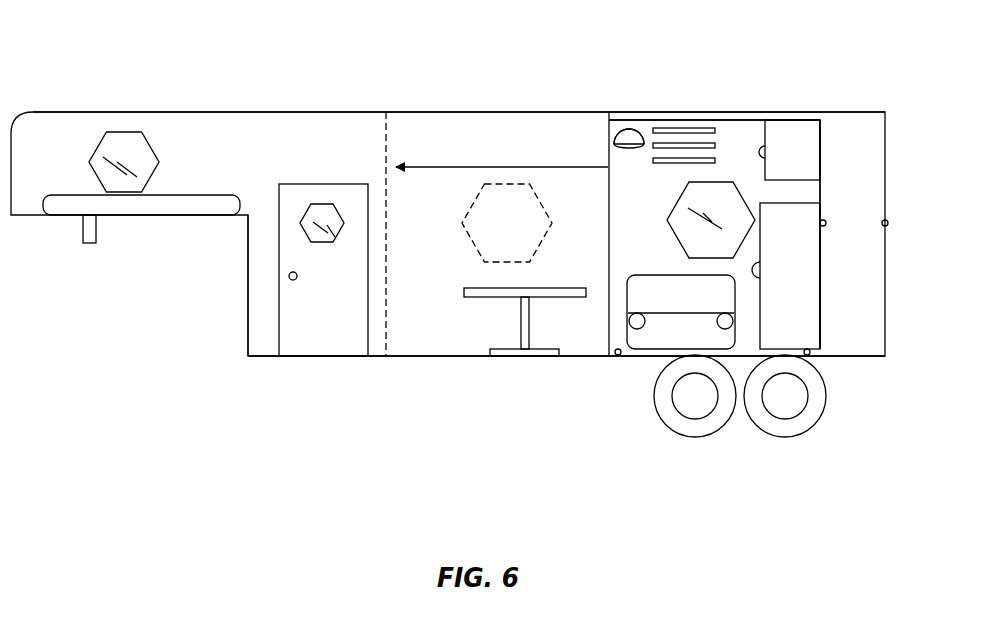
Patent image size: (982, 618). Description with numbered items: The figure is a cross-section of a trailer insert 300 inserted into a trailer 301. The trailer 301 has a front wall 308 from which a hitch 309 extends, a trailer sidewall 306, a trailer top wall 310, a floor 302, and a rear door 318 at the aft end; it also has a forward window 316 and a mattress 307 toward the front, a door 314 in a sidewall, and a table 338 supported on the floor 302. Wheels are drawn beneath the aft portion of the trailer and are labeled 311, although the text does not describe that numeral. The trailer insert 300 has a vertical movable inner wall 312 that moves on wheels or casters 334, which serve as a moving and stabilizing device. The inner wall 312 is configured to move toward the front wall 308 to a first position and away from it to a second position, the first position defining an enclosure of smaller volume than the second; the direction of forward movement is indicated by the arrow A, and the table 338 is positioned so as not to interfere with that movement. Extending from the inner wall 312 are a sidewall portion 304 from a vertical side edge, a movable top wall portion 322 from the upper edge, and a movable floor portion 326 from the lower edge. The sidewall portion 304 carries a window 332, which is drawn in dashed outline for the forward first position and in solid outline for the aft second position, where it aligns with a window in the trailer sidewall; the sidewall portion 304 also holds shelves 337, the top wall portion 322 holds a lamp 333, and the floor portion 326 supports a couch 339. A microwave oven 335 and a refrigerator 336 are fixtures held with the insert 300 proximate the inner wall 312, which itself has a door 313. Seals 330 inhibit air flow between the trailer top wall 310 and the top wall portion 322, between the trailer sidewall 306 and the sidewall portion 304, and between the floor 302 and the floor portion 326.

The trailer insert 300 is at (711, 118).
The trailer 301 is at (121, 84).
The floor 302 is at (418, 357).
The sidewall portion 304 is at (402, 188).
The trailer sidewall 306 is at (243, 128).
The mattress 307 is at (182, 208).
The front wall 308 is at (247, 272).
The hitch 309 is at (88, 236).
The trailer top wall 310 is at (810, 113).
The wheel 311 is at (697, 424).
The vertical movable inner wall 312 is at (820, 185).
The door 313 is at (825, 226).
The door 314 is at (293, 315).
The forward window 316 is at (133, 150).
The rear door 318 is at (887, 221).
The movable top wall portion 322 is at (650, 128).
The movable floor portion 326 is at (647, 357).
The seals 330 is at (610, 117).
The window 332 is at (482, 190).
The lamp 333 is at (629, 130).
The wheels or casters 334 is at (809, 355).
The microwave oven 335 is at (805, 147).
The refrigerator 336 is at (805, 287).
The shelves 337 is at (672, 128).
The table 338 is at (523, 331).
The couch 339 is at (665, 298).
The arrow A is at (515, 167).